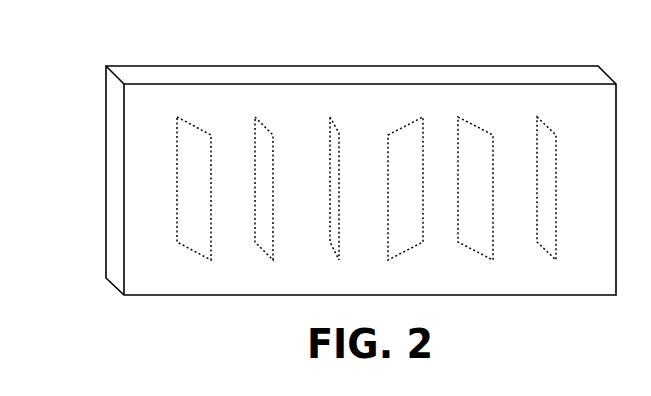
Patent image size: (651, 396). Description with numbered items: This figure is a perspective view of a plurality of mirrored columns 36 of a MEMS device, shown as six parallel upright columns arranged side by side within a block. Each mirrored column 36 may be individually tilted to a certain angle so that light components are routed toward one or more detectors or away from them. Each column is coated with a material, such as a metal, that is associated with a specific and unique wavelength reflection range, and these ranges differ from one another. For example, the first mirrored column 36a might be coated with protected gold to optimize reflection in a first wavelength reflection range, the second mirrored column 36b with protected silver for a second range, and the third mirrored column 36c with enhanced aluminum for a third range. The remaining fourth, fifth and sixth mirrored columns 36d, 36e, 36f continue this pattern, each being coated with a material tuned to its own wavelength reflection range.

The mirrored columns 36 is at (150, 181).
The first mirrored column 36a is at (202, 130).
The second mirrored column 36b is at (268, 130).
The third mirrored column 36c is at (337, 130).
The fourth mirrored column 36d is at (396, 133).
The fifth mirrored column 36e is at (475, 127).
The sixth mirrored column 36f is at (550, 128).